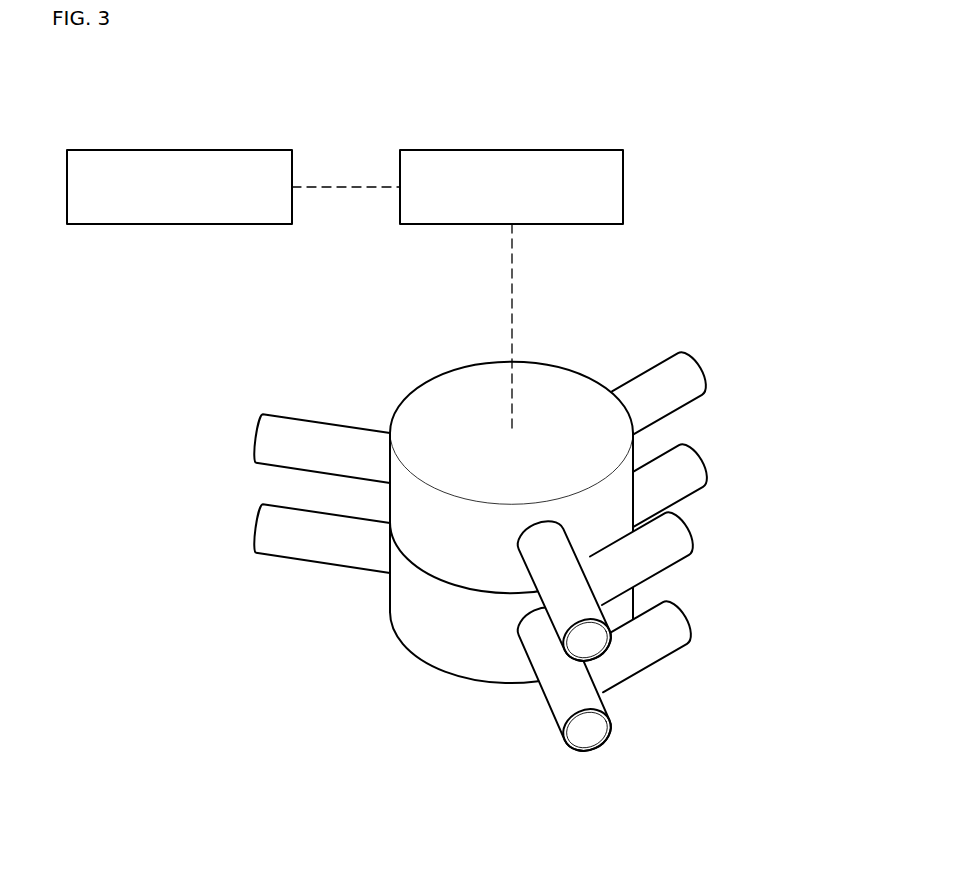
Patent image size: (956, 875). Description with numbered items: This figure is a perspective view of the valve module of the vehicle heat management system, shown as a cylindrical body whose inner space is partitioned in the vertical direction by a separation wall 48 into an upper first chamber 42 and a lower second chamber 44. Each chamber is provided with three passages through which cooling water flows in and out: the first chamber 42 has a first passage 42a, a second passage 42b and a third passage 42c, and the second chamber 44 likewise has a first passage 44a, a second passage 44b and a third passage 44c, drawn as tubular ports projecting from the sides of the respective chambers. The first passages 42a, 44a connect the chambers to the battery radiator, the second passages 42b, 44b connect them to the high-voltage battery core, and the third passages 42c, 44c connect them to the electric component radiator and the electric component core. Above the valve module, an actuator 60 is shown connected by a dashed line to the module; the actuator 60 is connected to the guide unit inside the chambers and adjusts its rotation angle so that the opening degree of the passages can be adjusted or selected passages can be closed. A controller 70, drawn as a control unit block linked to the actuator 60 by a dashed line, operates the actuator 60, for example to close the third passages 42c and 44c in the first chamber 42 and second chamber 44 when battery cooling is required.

The controller 70 is at (167, 150).
The actuator 60 is at (512, 150).
The first chamber 42 is at (458, 411).
The second chamber 44 is at (424, 631).
The separation wall 48 is at (433, 577).
The first passage 42a is at (693, 378).
The second passage 42b is at (268, 447).
The third passage 42c is at (573, 583).
The first passage 44a is at (692, 468).
The second passage 44b is at (268, 537).
The third passage 44c is at (566, 700).